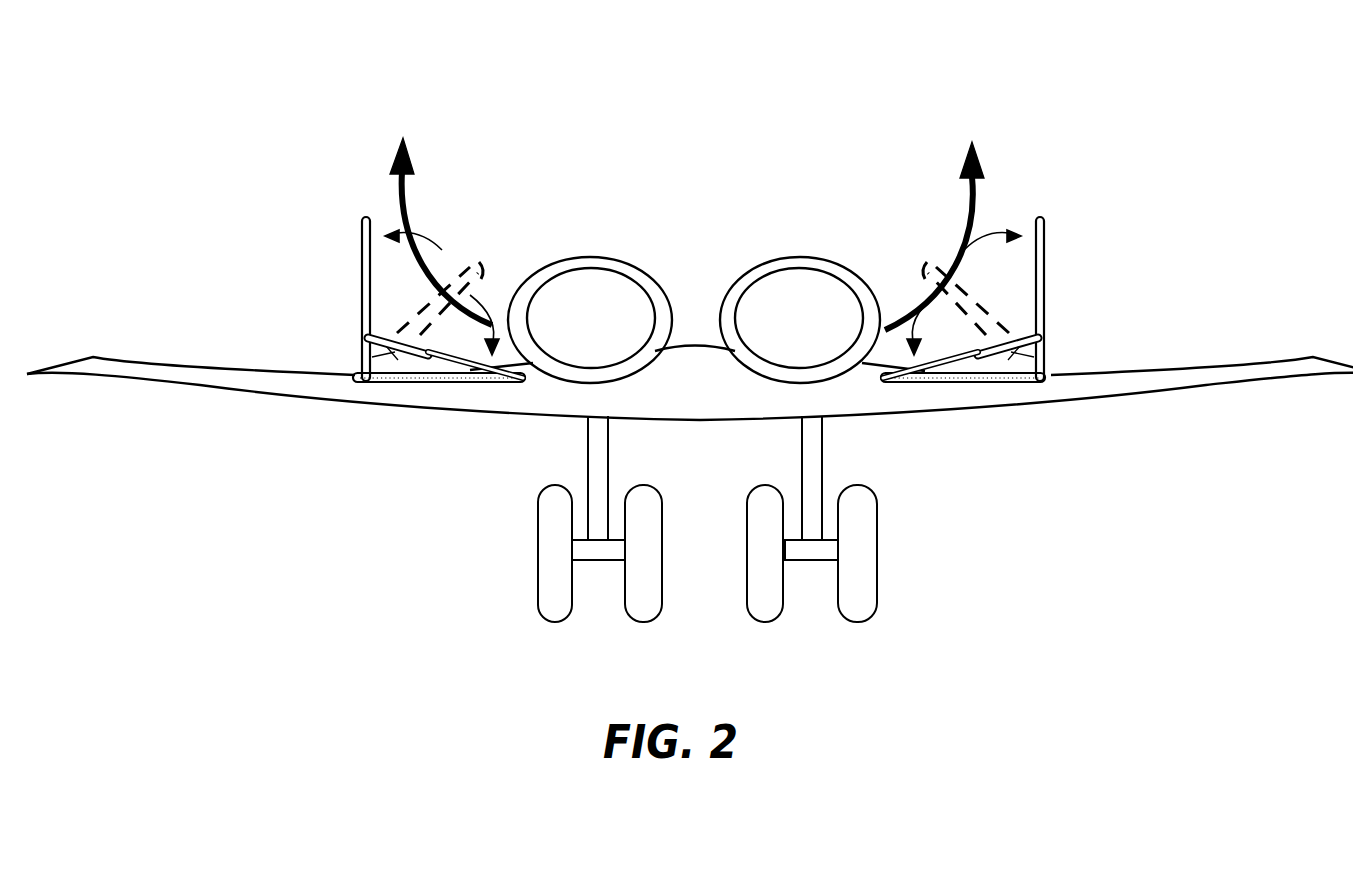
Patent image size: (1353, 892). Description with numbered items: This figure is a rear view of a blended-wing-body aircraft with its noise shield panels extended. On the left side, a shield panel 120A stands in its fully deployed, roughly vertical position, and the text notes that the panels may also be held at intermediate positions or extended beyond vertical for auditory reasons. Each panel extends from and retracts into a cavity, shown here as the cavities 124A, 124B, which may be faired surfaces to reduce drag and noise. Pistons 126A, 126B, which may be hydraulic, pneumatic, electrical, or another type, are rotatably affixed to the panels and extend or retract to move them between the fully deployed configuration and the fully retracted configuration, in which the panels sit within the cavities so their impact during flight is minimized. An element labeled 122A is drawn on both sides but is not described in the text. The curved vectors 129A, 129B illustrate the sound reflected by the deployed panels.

The shield panel 120A is at (360, 297).
The hinge link 122A is at (418, 356).
The cavity 124A is at (465, 383).
The cavity 124B is at (928, 382).
The piston 126A is at (364, 338).
The piston 126B is at (1045, 338).
The vector 129A is at (434, 221).
The vector 129B is at (937, 223).